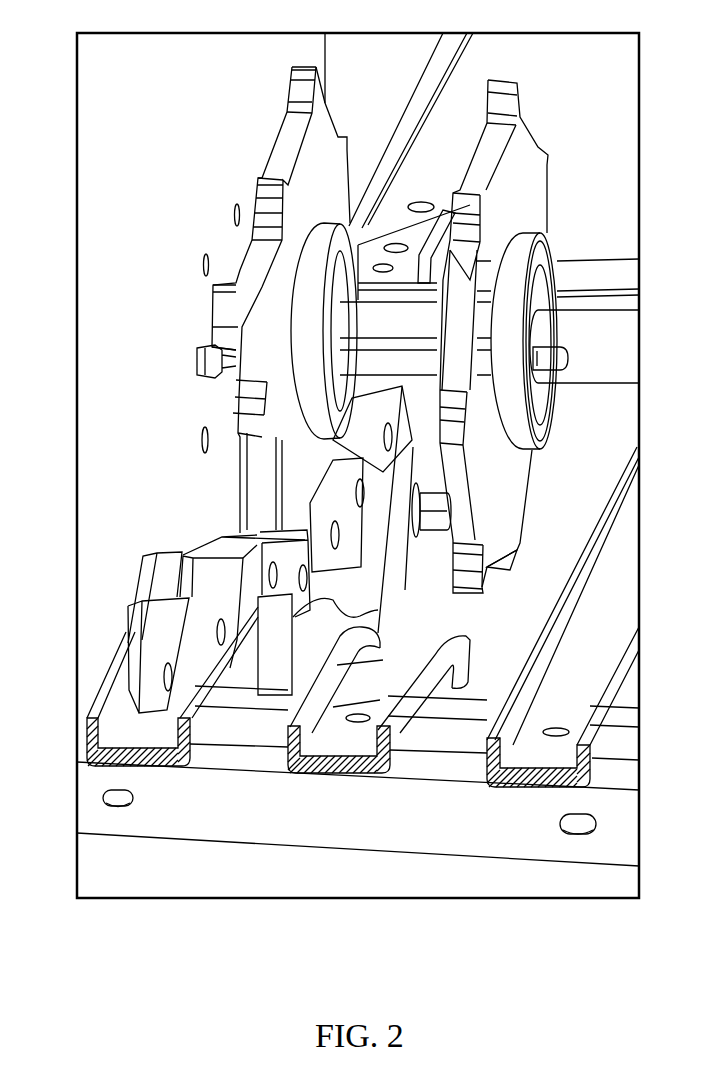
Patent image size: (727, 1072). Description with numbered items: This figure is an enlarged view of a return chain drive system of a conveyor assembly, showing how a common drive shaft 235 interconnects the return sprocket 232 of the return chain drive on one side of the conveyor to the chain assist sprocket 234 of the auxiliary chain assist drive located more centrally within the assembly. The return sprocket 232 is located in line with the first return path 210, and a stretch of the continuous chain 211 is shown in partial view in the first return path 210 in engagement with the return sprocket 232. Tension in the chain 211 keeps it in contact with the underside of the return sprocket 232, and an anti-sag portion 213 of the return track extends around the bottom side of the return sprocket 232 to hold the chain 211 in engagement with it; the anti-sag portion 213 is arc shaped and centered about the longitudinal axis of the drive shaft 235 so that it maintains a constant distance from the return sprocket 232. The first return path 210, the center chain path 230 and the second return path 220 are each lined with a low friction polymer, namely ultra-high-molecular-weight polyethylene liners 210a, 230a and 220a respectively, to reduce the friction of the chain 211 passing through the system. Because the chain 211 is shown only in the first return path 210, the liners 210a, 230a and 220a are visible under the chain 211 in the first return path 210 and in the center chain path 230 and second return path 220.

The first return path 210 is at (139, 686).
The UHMW polyethylene liner 210a is at (123, 732).
The chain 211 is at (147, 683).
The anti-sag portion 213 is at (372, 552).
The second return path 220 is at (606, 604).
The UHMW polyethylene liner 220a is at (515, 787).
The center chain path 230 is at (392, 670).
The UHMW polyethylene liner 230a is at (338, 777).
The return sprocket 232 is at (265, 253).
The chain assist sprocket 234 is at (490, 162).
The drive shaft 235 is at (605, 347).